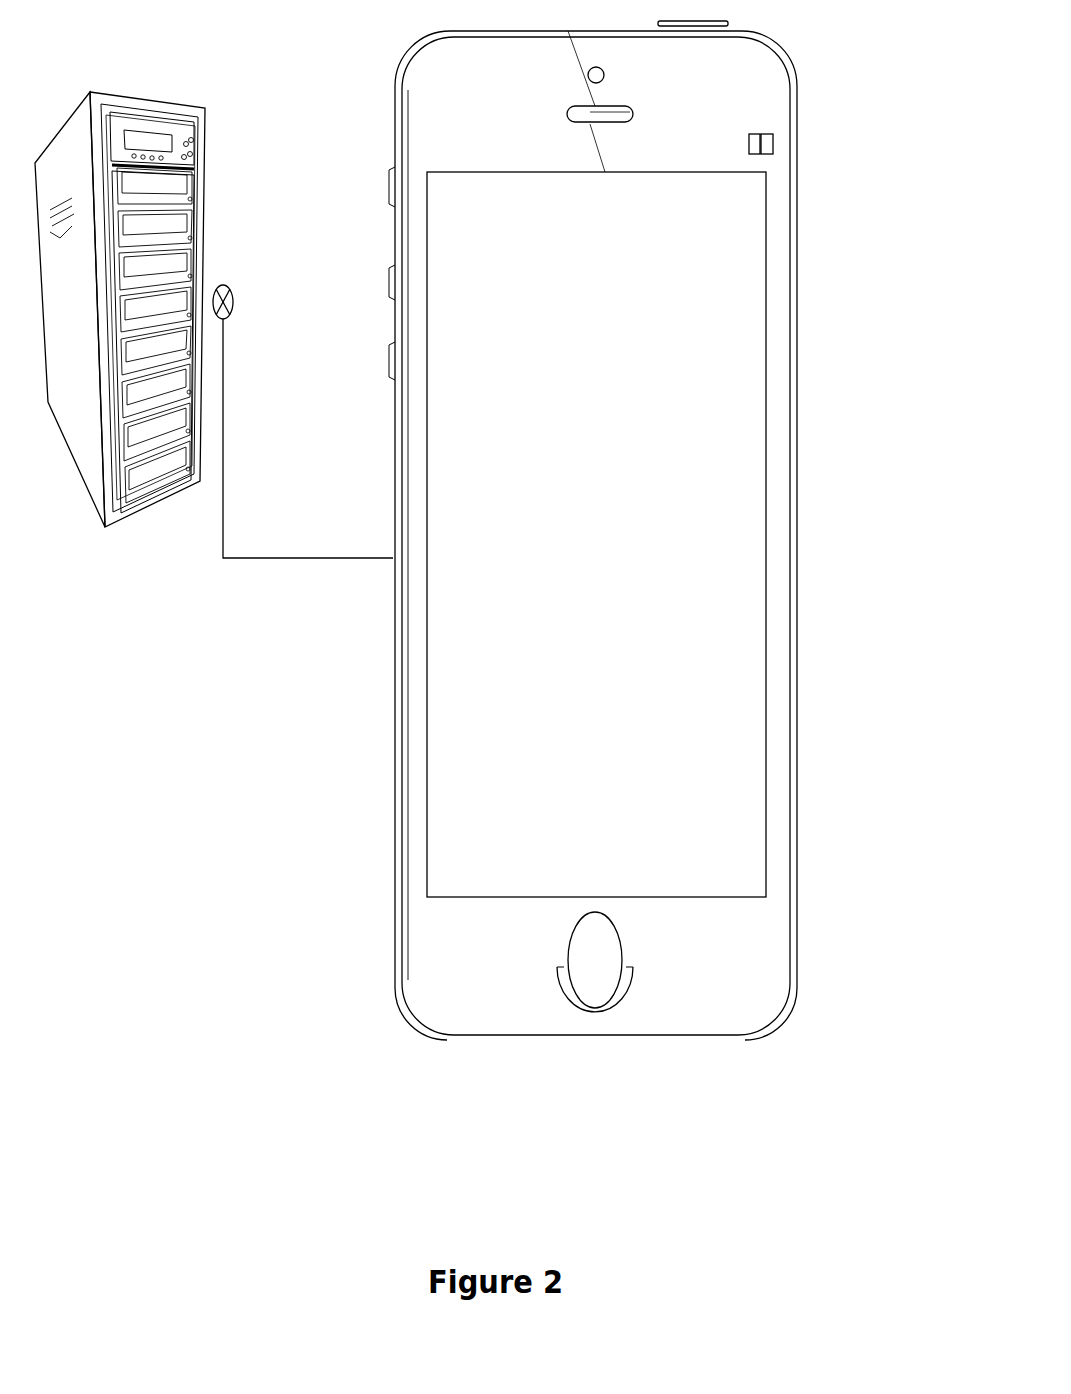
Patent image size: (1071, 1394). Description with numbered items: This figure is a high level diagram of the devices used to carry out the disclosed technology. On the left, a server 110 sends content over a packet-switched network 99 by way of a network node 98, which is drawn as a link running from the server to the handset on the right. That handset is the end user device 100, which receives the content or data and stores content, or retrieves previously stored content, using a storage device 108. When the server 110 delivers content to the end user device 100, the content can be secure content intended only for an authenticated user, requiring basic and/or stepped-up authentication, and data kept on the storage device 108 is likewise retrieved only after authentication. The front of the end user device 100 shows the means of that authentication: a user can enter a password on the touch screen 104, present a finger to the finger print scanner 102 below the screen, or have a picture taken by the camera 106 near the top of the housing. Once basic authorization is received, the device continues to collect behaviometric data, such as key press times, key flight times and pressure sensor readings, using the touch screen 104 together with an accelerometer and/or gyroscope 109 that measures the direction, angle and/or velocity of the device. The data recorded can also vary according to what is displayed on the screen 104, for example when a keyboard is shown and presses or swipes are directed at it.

The network node 98 is at (242, 303).
The packet-switched network 99 is at (308, 458).
The end user device 100 is at (669, 571).
The finger print scanner 102 is at (597, 948).
The touch screen 104 is at (742, 512).
The camera 106 is at (668, 78).
The storage device 108 is at (752, 155).
The accelerometer and/or gyroscope 109 is at (775, 155).
The server 110 is at (118, 331).